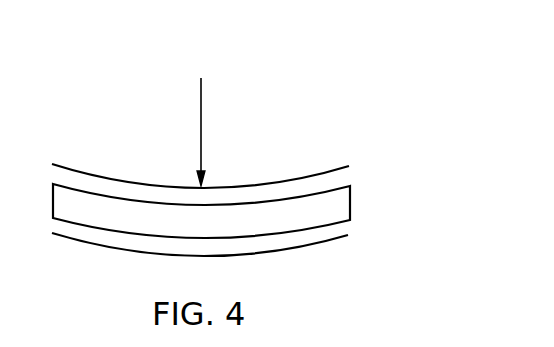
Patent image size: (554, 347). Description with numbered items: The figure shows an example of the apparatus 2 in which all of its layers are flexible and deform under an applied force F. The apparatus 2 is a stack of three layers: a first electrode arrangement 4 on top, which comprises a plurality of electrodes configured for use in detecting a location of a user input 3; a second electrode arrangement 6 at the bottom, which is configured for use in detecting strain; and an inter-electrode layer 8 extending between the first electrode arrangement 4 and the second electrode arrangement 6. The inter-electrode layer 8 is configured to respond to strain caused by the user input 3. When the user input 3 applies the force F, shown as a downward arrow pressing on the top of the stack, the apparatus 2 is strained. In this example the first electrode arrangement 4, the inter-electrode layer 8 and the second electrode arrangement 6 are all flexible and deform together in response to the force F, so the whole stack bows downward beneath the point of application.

The apparatus 2 is at (232, 182).
The user input 3 is at (198, 97).
The first electrode arrangement 4 is at (348, 166).
The second electrode arrangement 6 is at (347, 235).
The inter-electrode layer 8 is at (350, 200).